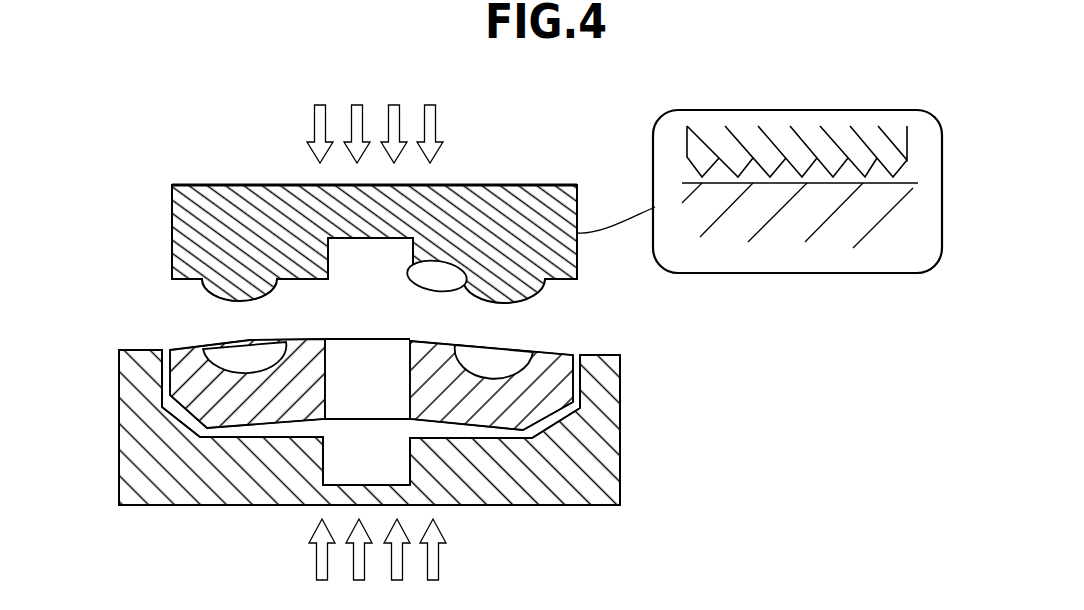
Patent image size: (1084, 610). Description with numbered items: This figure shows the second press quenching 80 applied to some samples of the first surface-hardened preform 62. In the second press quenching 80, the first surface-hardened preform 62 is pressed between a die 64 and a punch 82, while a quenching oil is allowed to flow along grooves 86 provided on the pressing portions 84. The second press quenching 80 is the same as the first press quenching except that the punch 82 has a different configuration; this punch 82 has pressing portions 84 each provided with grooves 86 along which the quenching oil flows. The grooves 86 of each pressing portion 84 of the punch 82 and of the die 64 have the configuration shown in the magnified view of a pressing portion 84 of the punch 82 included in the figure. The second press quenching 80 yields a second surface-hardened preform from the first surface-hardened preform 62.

The second press quenching 80 is at (188, 138).
The punch 82 is at (543, 203).
The pressing portions 84 is at (297, 272).
The first surface-hardened preform 62 is at (560, 352).
The die 64 is at (607, 453).
The grooves 86 is at (820, 175).